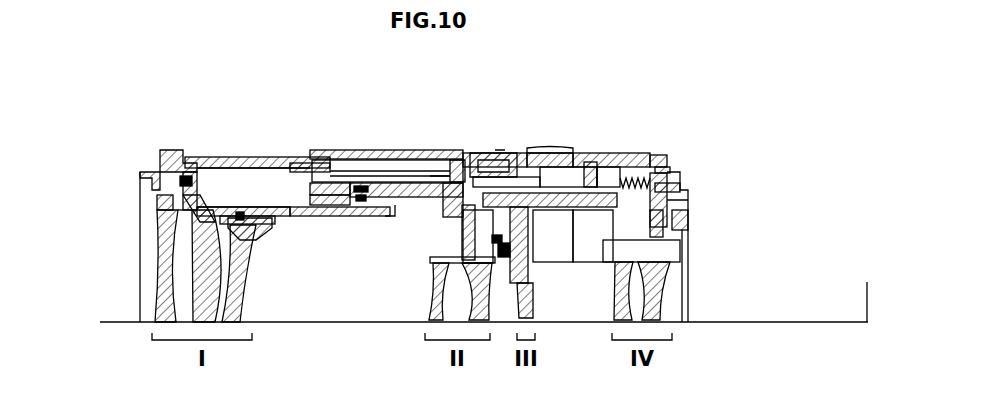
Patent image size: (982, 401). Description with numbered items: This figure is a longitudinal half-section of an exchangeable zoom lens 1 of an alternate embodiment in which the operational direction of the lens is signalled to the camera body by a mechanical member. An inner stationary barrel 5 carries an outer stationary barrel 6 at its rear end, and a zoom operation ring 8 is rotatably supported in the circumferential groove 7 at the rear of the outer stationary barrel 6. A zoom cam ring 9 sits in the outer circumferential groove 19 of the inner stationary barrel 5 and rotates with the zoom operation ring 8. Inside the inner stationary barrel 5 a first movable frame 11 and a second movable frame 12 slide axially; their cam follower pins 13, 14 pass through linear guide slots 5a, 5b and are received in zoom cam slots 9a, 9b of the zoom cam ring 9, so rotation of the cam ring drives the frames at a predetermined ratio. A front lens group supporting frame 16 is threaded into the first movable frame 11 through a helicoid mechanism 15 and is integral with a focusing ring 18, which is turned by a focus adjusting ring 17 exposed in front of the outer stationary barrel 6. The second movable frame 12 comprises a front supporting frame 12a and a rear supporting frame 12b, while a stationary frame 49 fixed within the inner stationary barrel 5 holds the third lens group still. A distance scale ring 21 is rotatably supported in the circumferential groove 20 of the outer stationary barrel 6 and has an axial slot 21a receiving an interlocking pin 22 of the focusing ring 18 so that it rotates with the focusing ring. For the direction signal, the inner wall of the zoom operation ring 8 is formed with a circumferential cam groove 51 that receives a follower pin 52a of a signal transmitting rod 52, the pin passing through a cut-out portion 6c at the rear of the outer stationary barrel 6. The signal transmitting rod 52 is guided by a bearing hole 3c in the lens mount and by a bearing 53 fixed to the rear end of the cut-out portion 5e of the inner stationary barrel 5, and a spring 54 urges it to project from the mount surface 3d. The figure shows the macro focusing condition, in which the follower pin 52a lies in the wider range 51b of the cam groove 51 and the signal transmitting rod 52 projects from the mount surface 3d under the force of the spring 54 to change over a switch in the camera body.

The exchangeable zoom lens 1 is at (362, 140).
The bearing hole 3c is at (667, 176).
The mount surface 3d is at (680, 212).
The inner stationary barrel 5 is at (312, 198).
The linear guide slot 5a is at (395, 212).
The linear guide slot 5b is at (463, 207).
The cut-out portion 5e is at (577, 210).
The outer stationary barrel 6 is at (386, 150).
The cut-out portion 6c is at (577, 160).
The circumferential groove 7 is at (526, 150).
The zoom operation ring 8 is at (548, 148).
The zoom cam ring 9 is at (335, 205).
The zoom cam slot 9a is at (338, 185).
The zoom cam slot 9b is at (493, 158).
The first movable frame 11 is at (292, 218).
The second movable frame 12 is at (607, 288).
The front supporting frame 12a is at (560, 246).
The rear supporting frame 12b is at (607, 247).
The cam follower pin 13 is at (360, 202).
The cam follower pin 14 is at (463, 227).
The helicoid mechanism 15 is at (247, 208).
The front lens group supporting frame 16 is at (262, 232).
The focus adjusting ring 17 is at (176, 150).
The focusing ring 18 is at (221, 157).
The outer circumferential groove 19 is at (392, 220).
The circumferential groove 20 is at (468, 160).
The distance scale ring 21 is at (407, 160).
The axial slot 21a is at (437, 180).
The interlocking pin 22 is at (318, 170).
The stationary frame 49 is at (530, 233).
The circumferential cam groove 51 is at (588, 147).
The wider range of cam groove 51b is at (620, 155).
The signal transmitting rod 52 is at (670, 188).
The follower pin 52a is at (598, 168).
The bearing 53 is at (653, 155).
The spring 54 is at (665, 165).